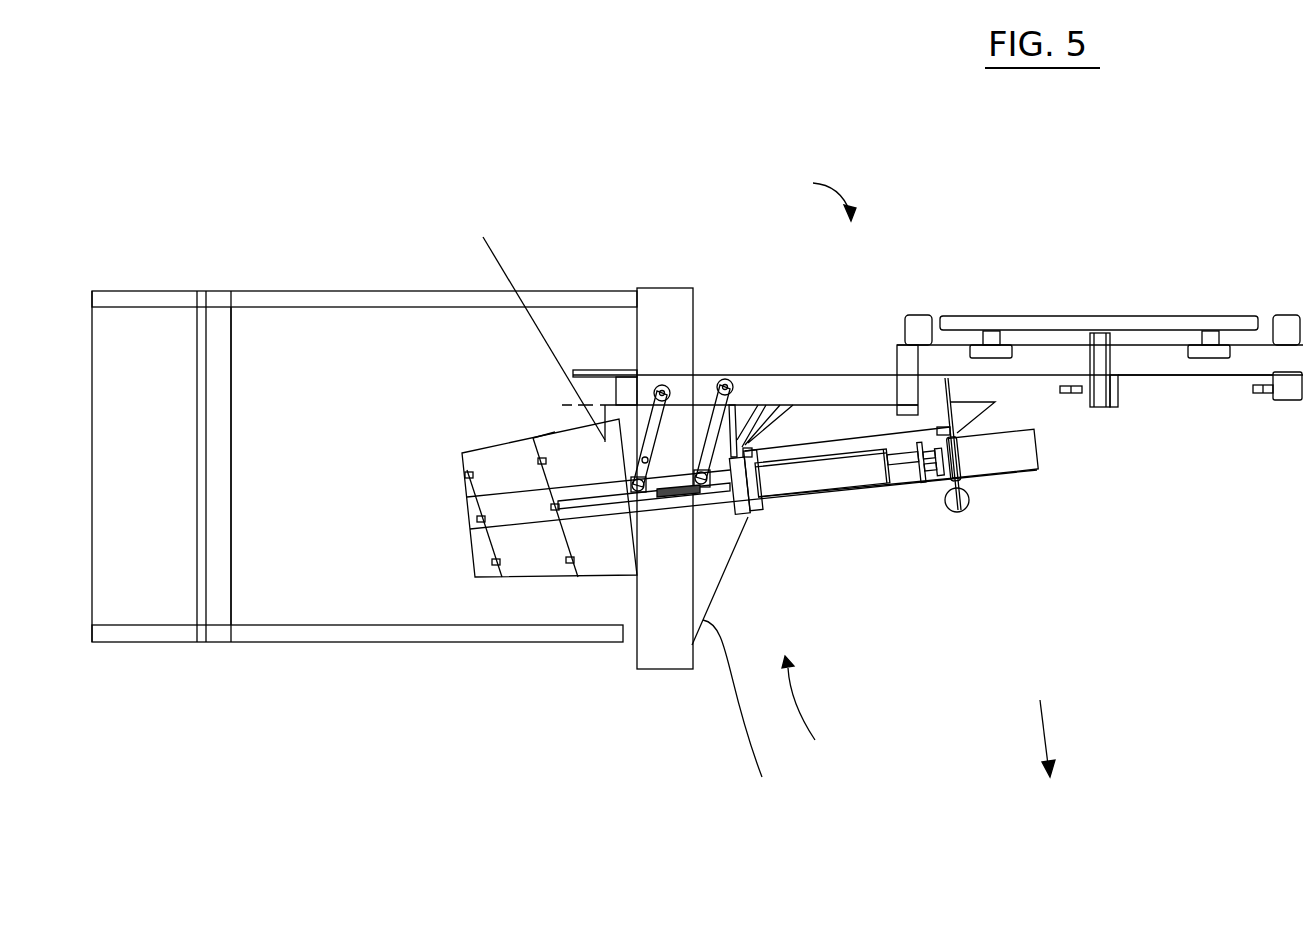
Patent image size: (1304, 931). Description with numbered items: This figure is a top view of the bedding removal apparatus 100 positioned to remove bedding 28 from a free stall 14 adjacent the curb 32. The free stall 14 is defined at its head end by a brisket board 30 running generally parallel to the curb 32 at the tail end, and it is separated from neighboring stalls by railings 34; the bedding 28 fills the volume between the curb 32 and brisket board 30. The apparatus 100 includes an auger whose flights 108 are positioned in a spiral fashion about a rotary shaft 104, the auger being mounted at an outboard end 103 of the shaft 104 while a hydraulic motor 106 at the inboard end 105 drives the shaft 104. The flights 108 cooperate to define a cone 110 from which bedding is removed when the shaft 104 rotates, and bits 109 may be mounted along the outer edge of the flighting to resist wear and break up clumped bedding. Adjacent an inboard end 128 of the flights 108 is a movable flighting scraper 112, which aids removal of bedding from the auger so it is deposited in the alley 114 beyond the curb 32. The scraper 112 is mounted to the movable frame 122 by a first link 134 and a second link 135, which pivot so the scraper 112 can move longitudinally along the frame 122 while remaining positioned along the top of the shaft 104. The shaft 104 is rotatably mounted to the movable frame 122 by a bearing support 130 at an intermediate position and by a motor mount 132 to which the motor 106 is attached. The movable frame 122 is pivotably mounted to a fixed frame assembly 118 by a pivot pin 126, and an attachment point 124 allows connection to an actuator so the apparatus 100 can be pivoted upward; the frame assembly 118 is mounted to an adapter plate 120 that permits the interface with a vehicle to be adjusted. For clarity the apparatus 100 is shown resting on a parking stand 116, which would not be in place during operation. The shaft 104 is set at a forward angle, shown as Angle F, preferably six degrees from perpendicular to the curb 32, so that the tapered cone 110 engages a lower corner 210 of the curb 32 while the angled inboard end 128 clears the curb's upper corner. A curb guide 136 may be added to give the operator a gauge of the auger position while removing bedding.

The free stall 14 is at (302, 397).
The bedding 28 is at (310, 527).
The brisket board 30 is at (139, 535).
The curb 32 is at (667, 668).
The railings 34 is at (363, 297).
The bedding removal apparatus 100 is at (800, 200).
The outboard end 103 is at (467, 513).
The rotary shaft 104 is at (803, 487).
The inboard end 105 is at (903, 470).
The hydraulic motor 106 is at (1040, 458).
The flights 108 is at (535, 455).
The bits 109 is at (496, 562).
The cone 110 is at (532, 578).
The flighting scraper 112 is at (590, 497).
The alley 114 is at (822, 710).
The parking stand 116 is at (1027, 458).
The fixed frame assembly 118 is at (1205, 370).
The adapter plate 120 is at (1132, 323).
The movable frame 122 is at (806, 390).
The attachment point 124 is at (1067, 395).
The pivot pin 126 is at (1107, 410).
The inboard end of flights 128 is at (637, 537).
The bearing support 130 is at (748, 413).
The motor mount 132 is at (948, 397).
The first link 134 is at (642, 402).
The second link 135 is at (707, 393).
The curb guide 136 is at (745, 724).
The lower corner of curb 210 is at (638, 580).
The Angle F is at (552, 328).